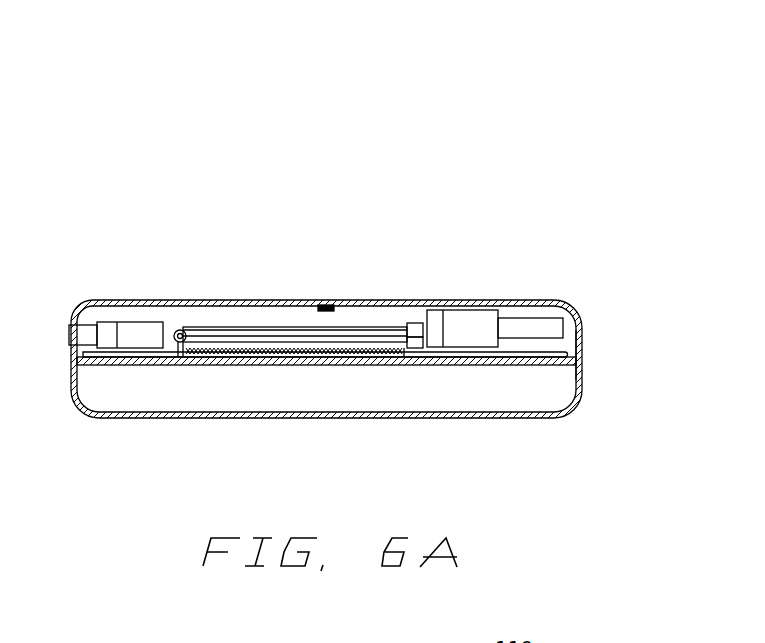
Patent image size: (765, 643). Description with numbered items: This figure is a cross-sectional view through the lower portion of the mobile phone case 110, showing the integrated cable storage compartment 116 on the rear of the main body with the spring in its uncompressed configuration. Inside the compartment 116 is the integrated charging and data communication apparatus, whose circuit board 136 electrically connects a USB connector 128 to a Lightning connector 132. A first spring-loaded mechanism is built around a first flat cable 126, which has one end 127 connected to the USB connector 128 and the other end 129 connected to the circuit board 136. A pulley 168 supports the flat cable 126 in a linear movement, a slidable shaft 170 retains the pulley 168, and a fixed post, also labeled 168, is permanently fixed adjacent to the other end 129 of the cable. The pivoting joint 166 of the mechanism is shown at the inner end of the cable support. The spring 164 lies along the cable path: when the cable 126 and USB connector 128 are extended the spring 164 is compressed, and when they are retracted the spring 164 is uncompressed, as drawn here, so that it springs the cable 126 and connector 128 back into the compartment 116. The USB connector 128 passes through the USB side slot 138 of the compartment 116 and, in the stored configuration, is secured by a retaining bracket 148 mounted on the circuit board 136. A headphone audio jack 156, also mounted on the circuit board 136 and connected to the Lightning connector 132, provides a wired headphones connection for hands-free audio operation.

The mobile phone case 110 is at (485, 118).
The integrated cable storage compartment 116 is at (72, 323).
The headphone audio jack 156 is at (130, 322).
The first flat cable 126 is at (225, 327).
The pivot 166 is at (178, 330).
The Lightning connector 132 is at (340, 303).
The one end of the first flat cable 127 is at (410, 323).
The pulley 168 is at (402, 352).
The retaining bracket 148 is at (462, 310).
The USB connector 128 is at (533, 317).
The spring 164 is at (287, 357).
The other end of the first flat cable 129 is at (417, 348).
The slidable shaft 170 is at (170, 367).
The circuit board 136 is at (533, 357).
The USB side slot 138 is at (580, 340).